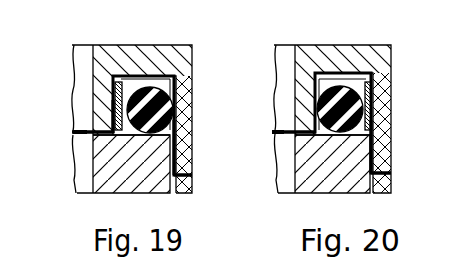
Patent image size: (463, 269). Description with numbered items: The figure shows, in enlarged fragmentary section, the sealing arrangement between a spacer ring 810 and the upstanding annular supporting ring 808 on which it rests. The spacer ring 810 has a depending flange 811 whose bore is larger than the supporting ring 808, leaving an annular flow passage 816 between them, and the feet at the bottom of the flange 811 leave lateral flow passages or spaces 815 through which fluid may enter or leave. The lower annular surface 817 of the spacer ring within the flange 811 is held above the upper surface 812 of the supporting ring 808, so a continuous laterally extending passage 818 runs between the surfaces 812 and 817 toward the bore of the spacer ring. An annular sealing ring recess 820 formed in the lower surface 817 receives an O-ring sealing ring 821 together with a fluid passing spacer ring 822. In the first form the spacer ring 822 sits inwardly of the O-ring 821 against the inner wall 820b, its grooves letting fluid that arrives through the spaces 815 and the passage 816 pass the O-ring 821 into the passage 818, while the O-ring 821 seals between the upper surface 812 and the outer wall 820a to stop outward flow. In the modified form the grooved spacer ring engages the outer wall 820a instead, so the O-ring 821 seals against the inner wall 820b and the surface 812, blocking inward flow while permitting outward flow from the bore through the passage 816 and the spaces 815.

In FIG. 19, the spacer ring 810 is at (157, 31).
In FIG. 20, the spacer ring 810 is at (370, 48).
In FIG. 19, the depending flange 811 is at (184, 148).
In FIG. 20, the depending flange 811 is at (382, 133).
In FIG. 19, the upstanding annular supporting ring 808 is at (104, 157).
In FIG. 20, the upstanding annular supporting ring 808 is at (360, 150).
In FIG. 19, the upper surface of the supporting ring 812 is at (100, 141).
In FIG. 20, the upper surface of the supporting ring 812 is at (372, 131).
In FIG. 19, the annular sealing ring recess 820 is at (178, 76).
In FIG. 20, the annular sealing ring recess 820 is at (378, 76).
In FIG. 19, the outer wall of the recess 820a is at (172, 124).
In FIG. 20, the outer wall of the recess 820a is at (364, 104).
In FIG. 19, the inner wall of the recess 820b is at (113, 76).
In FIG. 20, the inner wall of the recess 820b is at (313, 80).
In FIG. 19, the O-ring sealing ring 821 is at (168, 80).
In FIG. 20, the O-ring sealing ring 821 is at (372, 88).
In FIG. 19, the fluid passing spacer ring 822 is at (118, 95).
In FIG. 20, the fluid passing spacer ring 822 is at (368, 106).
In FIG. 19, the lower annular surface 817 is at (93, 122).
In FIG. 19, the laterally extending passage 818 is at (75, 134).
In FIG. 20, the laterally extending passage 818 is at (270, 138).
In FIG. 19, the annular flow passage 816 is at (176, 142).
In FIG. 20, the annular flow passage 816 is at (385, 169).
In FIG. 19, the lateral flow passages or spaces 815 is at (190, 177).
In FIG. 20, the lateral flow passages or spaces 815 is at (388, 175).